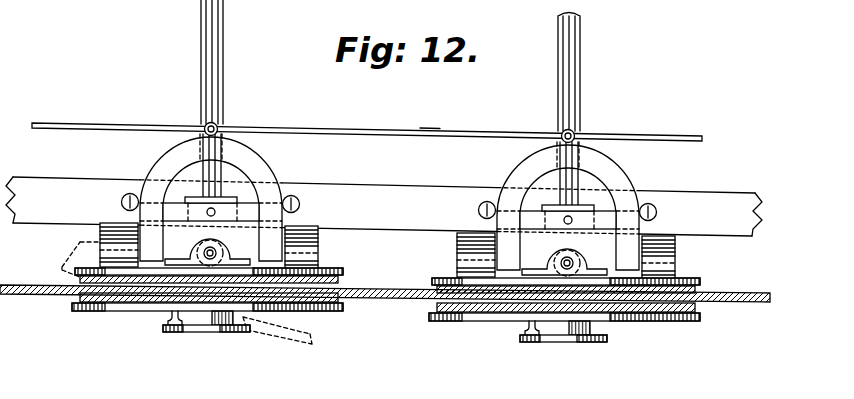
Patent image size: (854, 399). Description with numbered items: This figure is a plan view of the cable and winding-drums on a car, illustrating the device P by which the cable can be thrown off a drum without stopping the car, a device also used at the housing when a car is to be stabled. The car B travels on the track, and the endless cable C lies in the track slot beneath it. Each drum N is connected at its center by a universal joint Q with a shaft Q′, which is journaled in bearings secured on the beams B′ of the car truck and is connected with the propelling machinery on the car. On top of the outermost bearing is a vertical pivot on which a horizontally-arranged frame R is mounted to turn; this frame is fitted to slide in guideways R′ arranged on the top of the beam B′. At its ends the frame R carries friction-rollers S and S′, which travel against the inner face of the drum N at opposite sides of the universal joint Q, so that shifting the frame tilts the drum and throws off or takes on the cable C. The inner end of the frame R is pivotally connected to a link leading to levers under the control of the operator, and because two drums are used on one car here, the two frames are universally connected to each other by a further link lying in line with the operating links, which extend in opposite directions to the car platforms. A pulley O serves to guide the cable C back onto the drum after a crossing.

The shaft Q′ is at (227, 78).
The frame R is at (163, 163).
The guideways R′ is at (671, 208).
The car B is at (384, 171).
The beams B′ is at (382, 215).
The universal joint Q is at (232, 237).
The friction-roller S′ is at (457, 249).
The friction-roller S is at (318, 248).
The device P is at (384, 224).
The drum N is at (495, 323).
The pulley O is at (385, 338).
The cable C is at (400, 296).